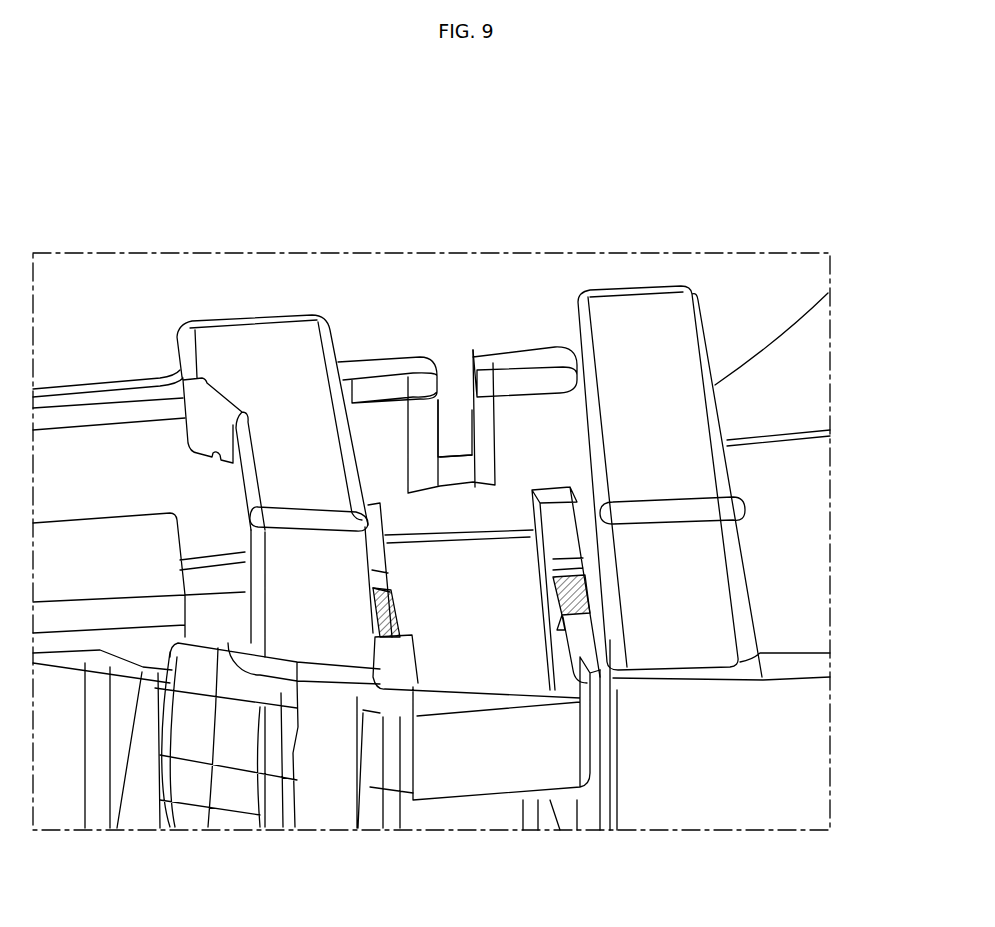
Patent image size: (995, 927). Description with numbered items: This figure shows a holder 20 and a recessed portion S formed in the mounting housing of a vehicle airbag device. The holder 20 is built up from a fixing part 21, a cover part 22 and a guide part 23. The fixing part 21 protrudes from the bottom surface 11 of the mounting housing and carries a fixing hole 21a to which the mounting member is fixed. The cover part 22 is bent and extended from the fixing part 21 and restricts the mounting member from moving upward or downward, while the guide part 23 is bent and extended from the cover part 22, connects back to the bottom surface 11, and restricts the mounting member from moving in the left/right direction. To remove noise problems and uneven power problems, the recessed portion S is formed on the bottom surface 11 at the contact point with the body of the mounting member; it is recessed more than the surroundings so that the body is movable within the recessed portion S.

The holder 20 is at (503, 163).
The fixing part 21 is at (530, 357).
The fixing hole 21a is at (473, 412).
The cover part 22 is at (305, 440).
The guide part 23 is at (688, 557).
The bottom surface 11 is at (627, 512).
The recessed portion S is at (595, 593).